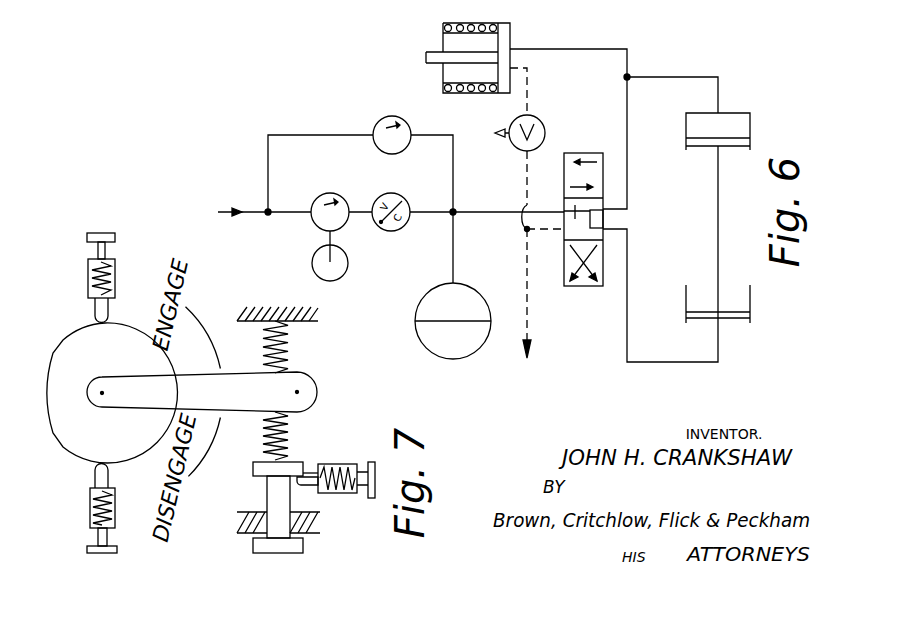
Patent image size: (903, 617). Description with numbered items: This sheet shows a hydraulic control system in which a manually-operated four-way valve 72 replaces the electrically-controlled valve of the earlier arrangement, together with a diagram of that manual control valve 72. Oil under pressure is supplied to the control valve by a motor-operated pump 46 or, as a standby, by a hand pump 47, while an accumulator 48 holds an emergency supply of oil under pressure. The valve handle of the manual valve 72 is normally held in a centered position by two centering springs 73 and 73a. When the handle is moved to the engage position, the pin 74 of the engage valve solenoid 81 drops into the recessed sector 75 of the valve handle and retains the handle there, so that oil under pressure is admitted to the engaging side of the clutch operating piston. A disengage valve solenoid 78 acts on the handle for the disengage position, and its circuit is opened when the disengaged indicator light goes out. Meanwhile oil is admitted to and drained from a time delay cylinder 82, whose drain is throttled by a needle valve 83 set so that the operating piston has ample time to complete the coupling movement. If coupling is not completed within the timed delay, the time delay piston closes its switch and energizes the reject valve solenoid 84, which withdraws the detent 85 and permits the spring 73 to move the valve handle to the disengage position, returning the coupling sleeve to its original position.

In FIG. 6, the motor-operated pump 46 is at (348, 269).
In FIG. 6, the standby hand pump 47 is at (384, 116).
In FIG. 6, the accumulator 48 is at (485, 341).
In FIG. 6, the manually-operated 4-way valve 72 is at (563, 185).
In FIG. 7, the manually-operated 4-way valve 72 is at (135, 323).
In FIG. 7, the centering spring 73 is at (288, 347).
In FIG. 7, the centering spring 73a is at (287, 438).
In FIG. 7, the pin 74 is at (109, 473).
In FIG. 7, the recessed sector 75 is at (55, 356).
In FIG. 7, the disengage valve solenoid 78 is at (88, 278).
In FIG. 7, the engage valve solenoid 81 is at (90, 503).
In FIG. 6, the time delay cylinder 82 is at (449, 93).
In FIG. 6, the needle valve 83 is at (523, 150).
In FIG. 7, the reject valve solenoid 84 is at (348, 463).
In FIG. 7, the detent 85 is at (310, 487).